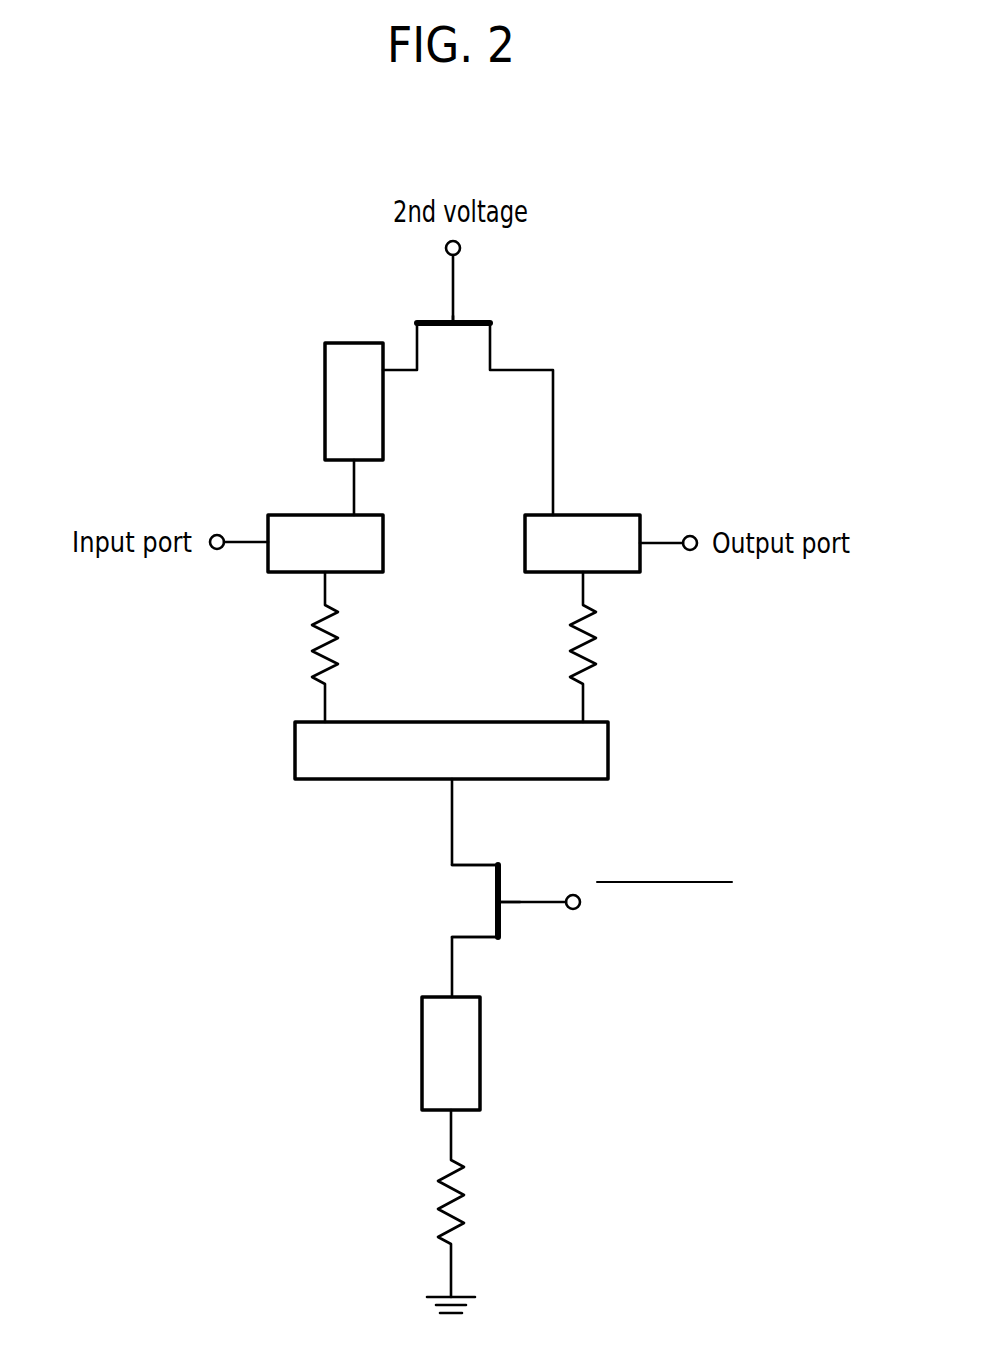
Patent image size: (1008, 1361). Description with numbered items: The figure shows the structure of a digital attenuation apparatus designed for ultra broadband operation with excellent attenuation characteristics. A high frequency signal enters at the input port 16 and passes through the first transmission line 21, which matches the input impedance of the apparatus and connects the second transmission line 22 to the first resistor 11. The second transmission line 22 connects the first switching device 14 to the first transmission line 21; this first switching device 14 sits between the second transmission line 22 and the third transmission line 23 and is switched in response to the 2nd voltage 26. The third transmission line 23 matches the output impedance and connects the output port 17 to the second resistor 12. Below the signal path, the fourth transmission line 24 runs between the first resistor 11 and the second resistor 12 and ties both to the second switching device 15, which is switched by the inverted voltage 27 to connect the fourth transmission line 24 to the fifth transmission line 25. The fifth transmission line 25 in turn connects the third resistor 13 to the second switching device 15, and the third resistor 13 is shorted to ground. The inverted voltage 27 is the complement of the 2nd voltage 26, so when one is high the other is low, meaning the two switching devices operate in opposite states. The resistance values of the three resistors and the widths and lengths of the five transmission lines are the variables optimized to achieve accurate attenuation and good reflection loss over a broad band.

The first resistor 11 is at (340, 657).
The second resistor 12 is at (598, 657).
The third resistor 13 is at (466, 1203).
The first switching device 14 is at (492, 322).
The second switching device 15 is at (500, 940).
The input port 16 is at (217, 535).
The output port 17 is at (690, 536).
The first transmission line 21 is at (384, 545).
The second transmission line 22 is at (324, 398).
The third transmission line 23 is at (524, 543).
The fourth transmission line 24 is at (609, 752).
The fifth transmission line 25 is at (481, 1050).
The 2nd voltage 26 is at (461, 247).
The inverted 2nd voltage 27 is at (573, 895).